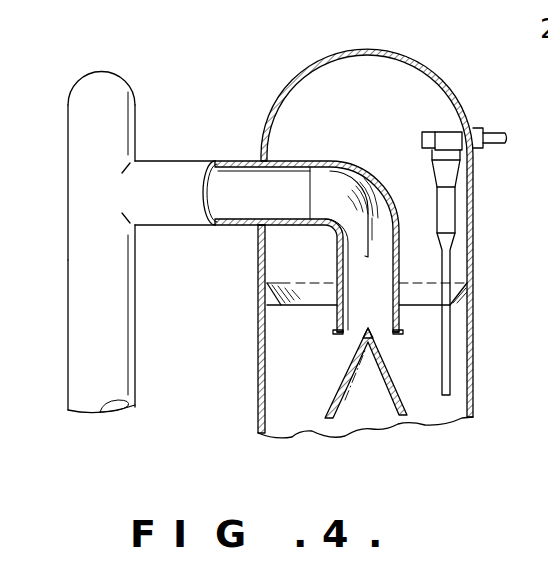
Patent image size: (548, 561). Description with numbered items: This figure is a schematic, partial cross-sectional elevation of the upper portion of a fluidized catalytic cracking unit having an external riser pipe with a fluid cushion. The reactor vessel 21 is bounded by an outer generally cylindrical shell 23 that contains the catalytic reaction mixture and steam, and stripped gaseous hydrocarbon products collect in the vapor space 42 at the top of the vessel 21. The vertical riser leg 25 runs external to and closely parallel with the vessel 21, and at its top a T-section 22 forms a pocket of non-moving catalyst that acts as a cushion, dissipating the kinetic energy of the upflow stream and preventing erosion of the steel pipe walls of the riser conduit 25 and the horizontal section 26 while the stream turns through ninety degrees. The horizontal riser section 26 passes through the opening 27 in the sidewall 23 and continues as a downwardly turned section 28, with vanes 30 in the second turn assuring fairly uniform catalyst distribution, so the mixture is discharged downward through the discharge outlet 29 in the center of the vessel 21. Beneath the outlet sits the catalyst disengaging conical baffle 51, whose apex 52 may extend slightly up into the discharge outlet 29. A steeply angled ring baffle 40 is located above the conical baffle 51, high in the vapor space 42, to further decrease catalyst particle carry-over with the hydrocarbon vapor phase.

The reactor vessel 21 is at (402, 49).
The T-section 22 is at (98, 72).
The outer generally cylindrical shell 23 is at (258, 413).
The reactor riser conduit 25 is at (70, 317).
The right angle turn section 26 is at (183, 160).
The opening 27 is at (258, 228).
The downwardly turned section 28 is at (338, 258).
The discharge outlet 29 is at (350, 333).
The vanes 30 is at (336, 183).
The ring baffle 40 is at (470, 298).
The space 42 is at (380, 109).
The conical baffle 51 is at (390, 372).
The apex 52 is at (369, 326).